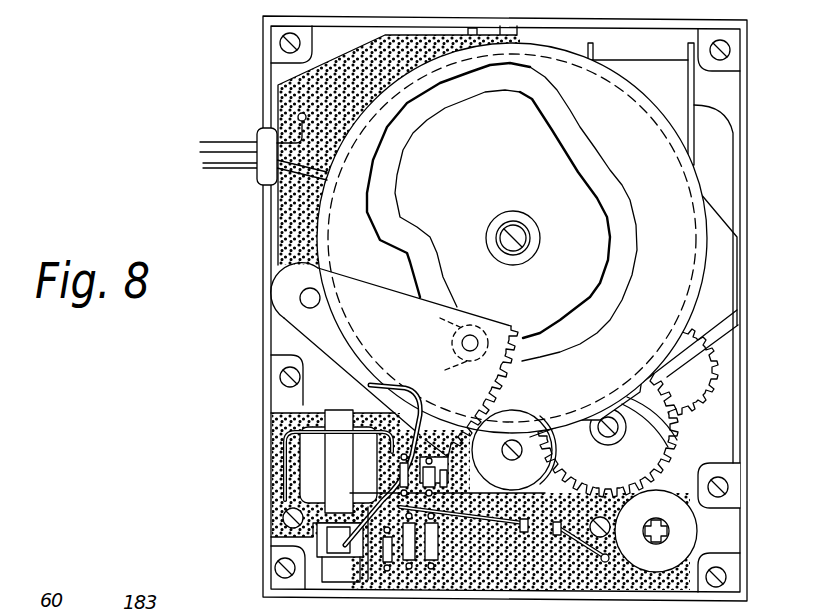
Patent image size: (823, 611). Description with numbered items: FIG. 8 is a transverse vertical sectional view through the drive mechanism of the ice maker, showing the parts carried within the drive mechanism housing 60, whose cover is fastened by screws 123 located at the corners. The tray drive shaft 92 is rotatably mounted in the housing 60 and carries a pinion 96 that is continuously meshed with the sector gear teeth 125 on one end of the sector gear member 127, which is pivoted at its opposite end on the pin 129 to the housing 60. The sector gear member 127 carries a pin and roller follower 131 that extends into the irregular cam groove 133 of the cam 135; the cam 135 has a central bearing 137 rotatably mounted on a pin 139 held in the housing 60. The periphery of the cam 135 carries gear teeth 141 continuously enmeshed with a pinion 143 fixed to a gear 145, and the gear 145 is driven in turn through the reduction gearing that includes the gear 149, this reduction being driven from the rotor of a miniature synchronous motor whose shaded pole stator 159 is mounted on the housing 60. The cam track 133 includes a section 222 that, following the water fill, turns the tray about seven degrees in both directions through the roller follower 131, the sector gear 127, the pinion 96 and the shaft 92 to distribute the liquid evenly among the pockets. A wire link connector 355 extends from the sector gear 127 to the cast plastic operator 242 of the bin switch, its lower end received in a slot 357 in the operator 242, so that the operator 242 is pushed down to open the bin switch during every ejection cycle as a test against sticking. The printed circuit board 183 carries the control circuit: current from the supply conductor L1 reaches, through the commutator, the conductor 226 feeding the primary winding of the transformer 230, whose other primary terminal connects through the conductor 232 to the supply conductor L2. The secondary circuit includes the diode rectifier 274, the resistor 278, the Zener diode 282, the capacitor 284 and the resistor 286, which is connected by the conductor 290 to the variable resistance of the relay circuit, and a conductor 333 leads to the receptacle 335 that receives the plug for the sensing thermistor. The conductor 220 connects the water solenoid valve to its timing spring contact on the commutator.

The drive mechanism housing 60 is at (263, 24).
The screws 123 is at (279, 44).
The cam 135 is at (427, 64).
The synchronous clock-type shaded pole stator 159 is at (728, 140).
The gear 149 is at (698, 370).
The gear teeth 141 is at (672, 430).
The pinion 143 is at (676, 440).
The gear 145 is at (668, 458).
The cam groove 133 is at (453, 103).
The central bearing 137 is at (516, 226).
The pin 139 is at (522, 236).
The cam track section 222 is at (524, 334).
The pinion 96 is at (505, 412).
The tray drive shaft 92 is at (522, 450).
The sector gear member 127 is at (300, 325).
The pin 129 is at (300, 298).
The pin and roller follower 131 is at (455, 344).
The sector gear teeth 125 is at (513, 332).
The transformer 230 is at (305, 465).
The conductor 232 is at (302, 438).
The conductor 226 is at (370, 412).
The slot 357 is at (317, 533).
The wire link connector 355 is at (422, 412).
The Zener diode 282 is at (425, 468).
The capacitor 284 is at (438, 482).
The resistor 286 is at (440, 553).
The diode rectifier 274 is at (385, 571).
The resistor 278 is at (410, 569).
The operator 242 is at (332, 585).
The receptacle 335 is at (598, 552).
The conductor 333 is at (604, 548).
The conductor 290 is at (659, 562).
The conductor 220 is at (256, 168).
The printed circuit board 183 is at (277, 237).
The supply conductor L-2 L2 is at (305, 125).
The supply conductor L-1 L1 is at (312, 152).